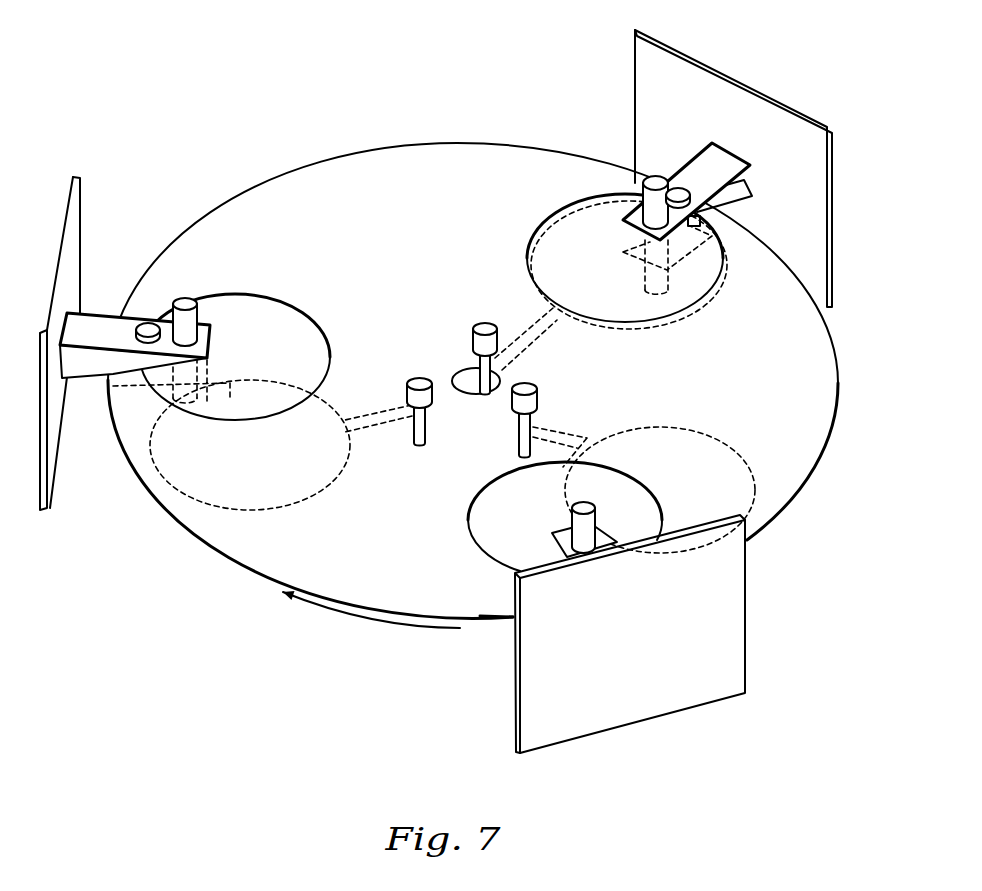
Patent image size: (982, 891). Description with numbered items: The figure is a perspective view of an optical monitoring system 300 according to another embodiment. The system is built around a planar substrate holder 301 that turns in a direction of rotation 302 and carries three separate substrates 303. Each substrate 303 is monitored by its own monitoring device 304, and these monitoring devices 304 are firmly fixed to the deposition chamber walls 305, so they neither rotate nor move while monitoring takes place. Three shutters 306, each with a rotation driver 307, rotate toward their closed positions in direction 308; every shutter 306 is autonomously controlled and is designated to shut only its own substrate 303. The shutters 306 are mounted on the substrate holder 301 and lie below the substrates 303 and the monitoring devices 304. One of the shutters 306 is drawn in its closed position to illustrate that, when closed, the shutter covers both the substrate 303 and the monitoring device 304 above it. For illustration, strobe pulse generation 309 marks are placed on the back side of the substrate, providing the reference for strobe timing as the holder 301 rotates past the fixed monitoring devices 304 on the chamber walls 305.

The optical monitoring system 300 is at (246, 124).
The planar substrate holder 301 is at (366, 150).
The direction of rotation 302 is at (355, 630).
The substrates 303 is at (277, 297).
The monitoring device 304 is at (97, 322).
The deposition chamber walls 305 is at (70, 176).
The shutters 306 is at (217, 512).
The rotation drivers 307 is at (474, 380).
The direction 308 is at (525, 312).
The strobe pulse generation marks 309 is at (113, 374).